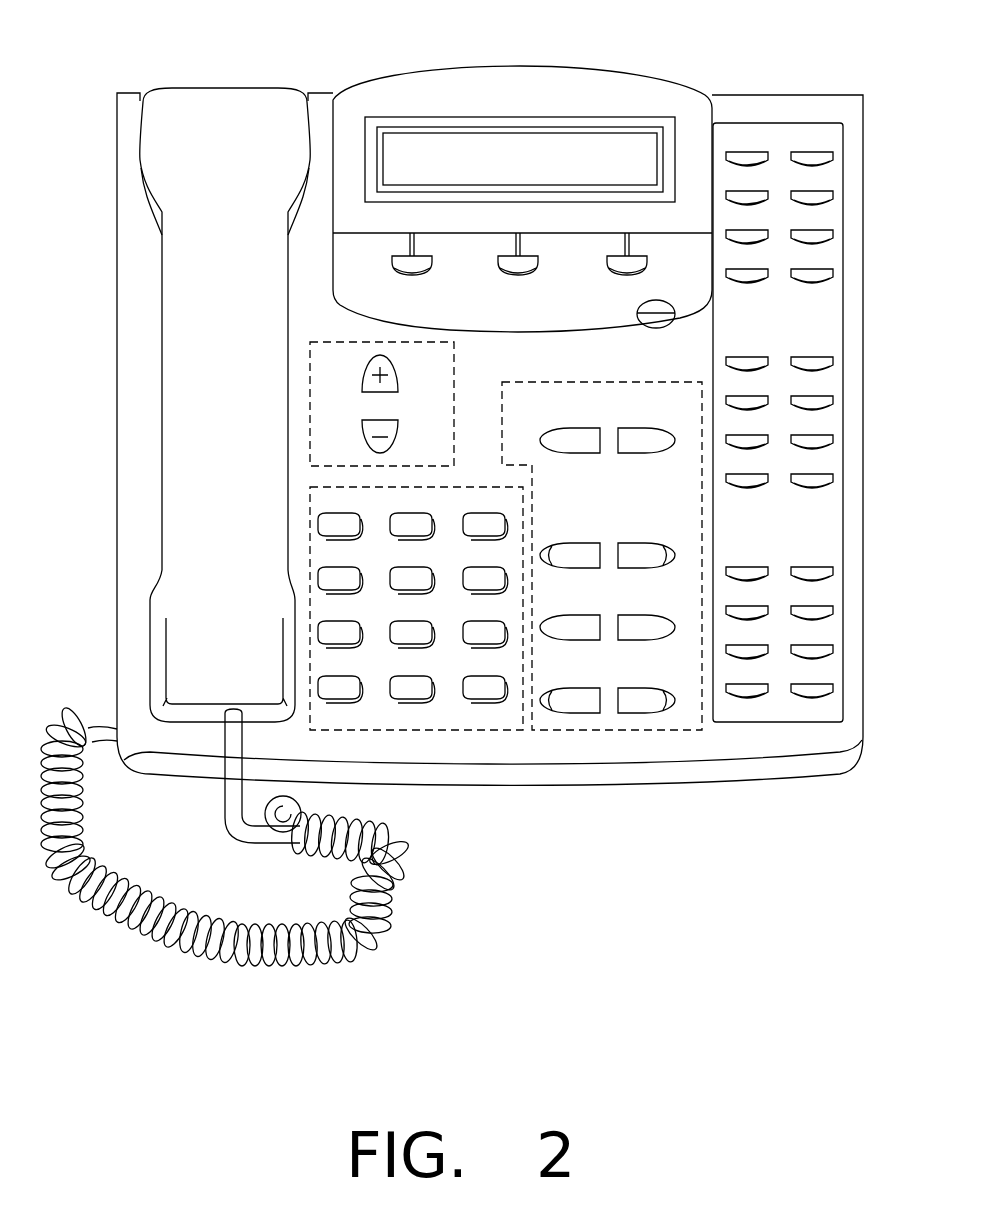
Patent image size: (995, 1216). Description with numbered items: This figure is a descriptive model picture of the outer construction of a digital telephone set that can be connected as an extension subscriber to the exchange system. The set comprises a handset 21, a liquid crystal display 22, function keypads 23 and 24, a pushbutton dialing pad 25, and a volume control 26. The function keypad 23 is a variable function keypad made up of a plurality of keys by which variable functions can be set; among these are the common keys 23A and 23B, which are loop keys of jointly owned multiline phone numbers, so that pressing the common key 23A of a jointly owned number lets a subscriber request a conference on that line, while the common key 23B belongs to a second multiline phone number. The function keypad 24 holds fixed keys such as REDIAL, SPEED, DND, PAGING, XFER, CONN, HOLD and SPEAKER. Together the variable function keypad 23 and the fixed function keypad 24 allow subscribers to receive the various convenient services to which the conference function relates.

The handset 21 is at (223, 98).
The liquid crystal display 22 is at (533, 92).
The function keypad 23 is at (798, 363).
The common key 23A is at (746, 160).
The common key 23B is at (818, 160).
The function keypad 24 is at (550, 382).
The pushbutton dialing pad 25 is at (470, 487).
The volume control 26 is at (454, 363).